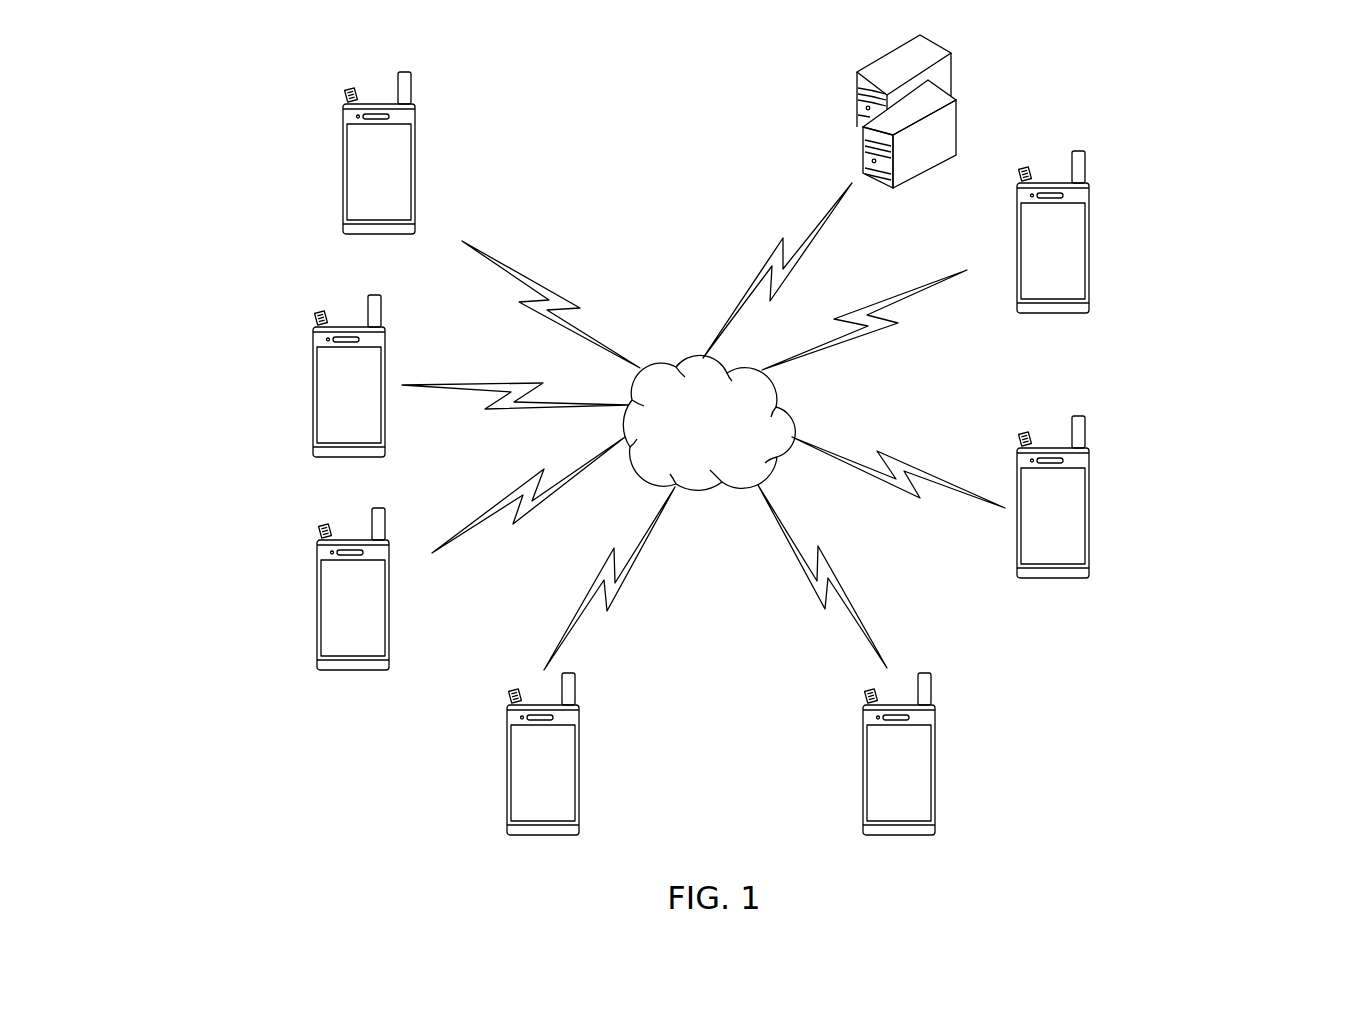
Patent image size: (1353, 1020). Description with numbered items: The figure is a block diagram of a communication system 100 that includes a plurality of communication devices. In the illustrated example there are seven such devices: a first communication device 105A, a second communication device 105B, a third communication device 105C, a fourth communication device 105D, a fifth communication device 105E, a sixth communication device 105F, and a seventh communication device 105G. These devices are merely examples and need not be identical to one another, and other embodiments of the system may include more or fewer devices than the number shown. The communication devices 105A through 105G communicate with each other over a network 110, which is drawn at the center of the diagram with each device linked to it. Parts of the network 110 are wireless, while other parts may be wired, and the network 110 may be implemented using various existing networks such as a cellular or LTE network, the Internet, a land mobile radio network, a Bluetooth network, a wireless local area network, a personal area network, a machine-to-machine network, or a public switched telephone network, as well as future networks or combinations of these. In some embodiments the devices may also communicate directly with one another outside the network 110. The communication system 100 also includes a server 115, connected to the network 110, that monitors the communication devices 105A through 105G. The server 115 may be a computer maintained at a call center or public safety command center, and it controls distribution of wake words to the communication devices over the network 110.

The communication system 100 is at (550, 91).
The first communication device 105A is at (341, 171).
The second communication device 105B is at (312, 391).
The third communication device 105C is at (316, 603).
The fourth communication device 105D is at (507, 768).
The fifth communication device 105E is at (936, 766).
The sixth communication device 105F is at (1089, 510).
The seventh communication device 105G is at (1089, 245).
The network 110 is at (700, 358).
The server 115 is at (951, 72).